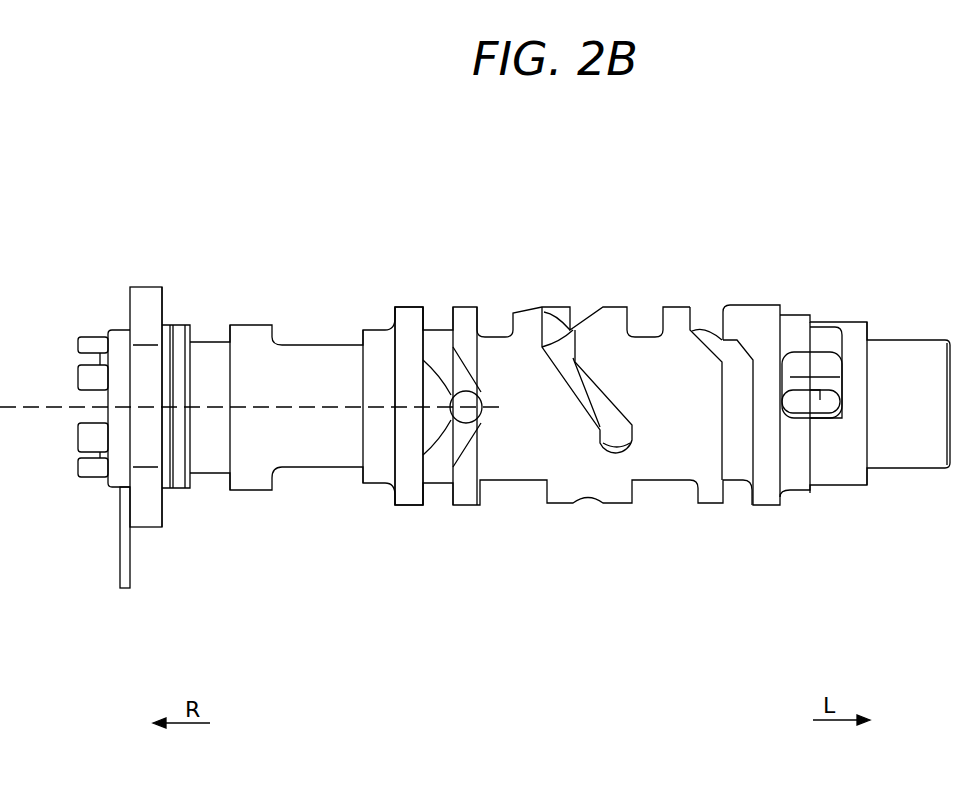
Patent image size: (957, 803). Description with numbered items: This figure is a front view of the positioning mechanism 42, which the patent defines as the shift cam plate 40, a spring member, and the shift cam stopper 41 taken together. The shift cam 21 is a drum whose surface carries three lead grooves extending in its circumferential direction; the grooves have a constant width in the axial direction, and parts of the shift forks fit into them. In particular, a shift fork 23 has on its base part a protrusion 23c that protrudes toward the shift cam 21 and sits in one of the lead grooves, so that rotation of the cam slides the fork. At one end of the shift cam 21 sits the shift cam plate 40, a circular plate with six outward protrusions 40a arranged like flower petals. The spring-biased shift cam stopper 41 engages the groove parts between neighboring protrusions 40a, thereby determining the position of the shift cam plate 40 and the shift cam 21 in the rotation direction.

The shift cam 21 is at (653, 294).
The shift fork 23 is at (495, 457).
The protrusion 23c is at (463, 423).
The shift cam plate 40 is at (158, 368).
The protrusion 40a is at (163, 304).
The shift cam stopper 41 is at (132, 563).
The positioning mechanism 42 is at (116, 606).